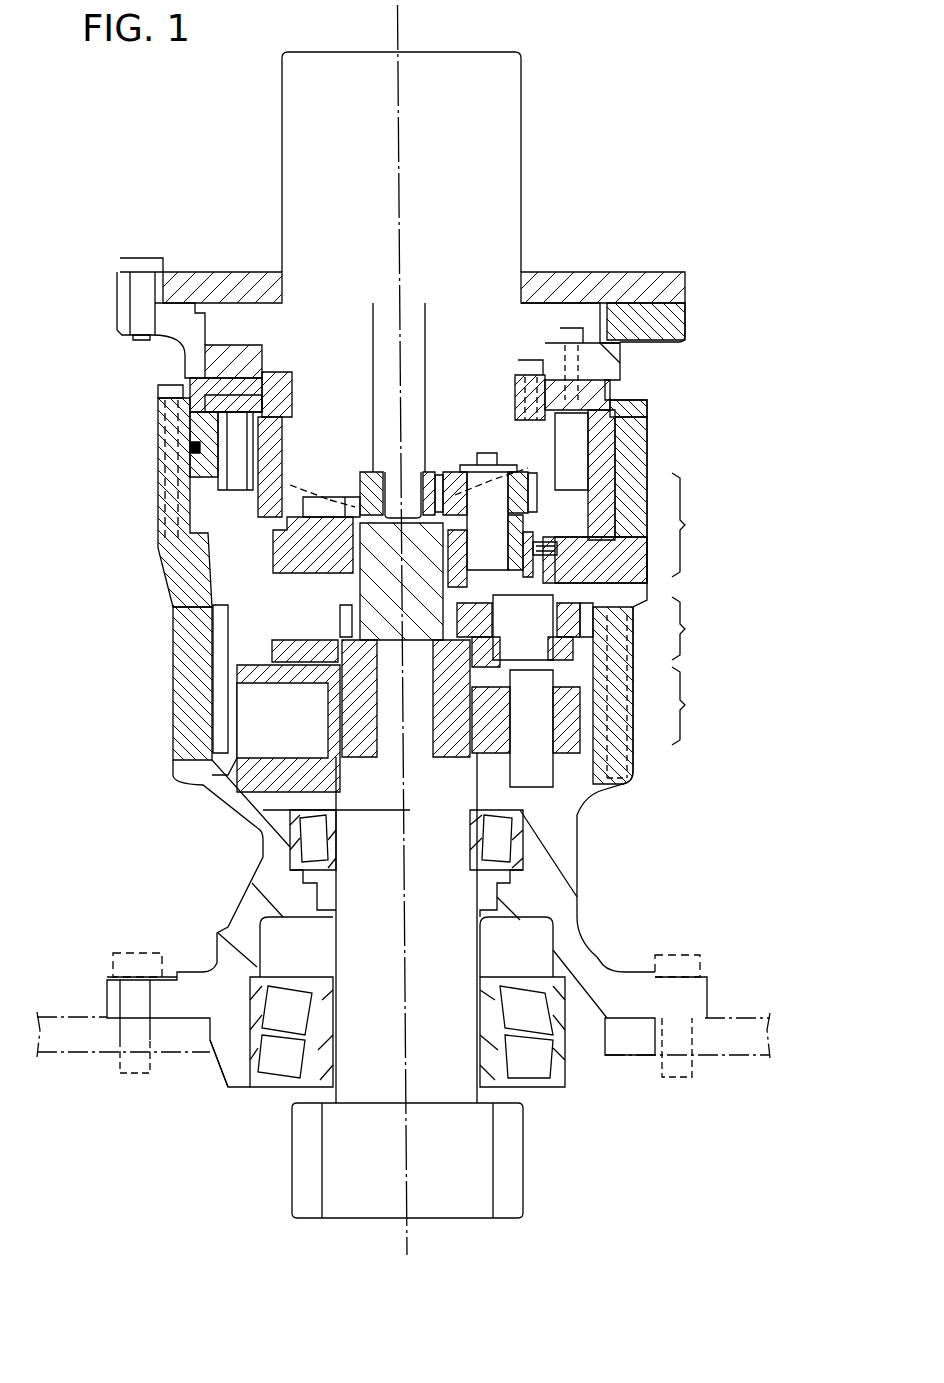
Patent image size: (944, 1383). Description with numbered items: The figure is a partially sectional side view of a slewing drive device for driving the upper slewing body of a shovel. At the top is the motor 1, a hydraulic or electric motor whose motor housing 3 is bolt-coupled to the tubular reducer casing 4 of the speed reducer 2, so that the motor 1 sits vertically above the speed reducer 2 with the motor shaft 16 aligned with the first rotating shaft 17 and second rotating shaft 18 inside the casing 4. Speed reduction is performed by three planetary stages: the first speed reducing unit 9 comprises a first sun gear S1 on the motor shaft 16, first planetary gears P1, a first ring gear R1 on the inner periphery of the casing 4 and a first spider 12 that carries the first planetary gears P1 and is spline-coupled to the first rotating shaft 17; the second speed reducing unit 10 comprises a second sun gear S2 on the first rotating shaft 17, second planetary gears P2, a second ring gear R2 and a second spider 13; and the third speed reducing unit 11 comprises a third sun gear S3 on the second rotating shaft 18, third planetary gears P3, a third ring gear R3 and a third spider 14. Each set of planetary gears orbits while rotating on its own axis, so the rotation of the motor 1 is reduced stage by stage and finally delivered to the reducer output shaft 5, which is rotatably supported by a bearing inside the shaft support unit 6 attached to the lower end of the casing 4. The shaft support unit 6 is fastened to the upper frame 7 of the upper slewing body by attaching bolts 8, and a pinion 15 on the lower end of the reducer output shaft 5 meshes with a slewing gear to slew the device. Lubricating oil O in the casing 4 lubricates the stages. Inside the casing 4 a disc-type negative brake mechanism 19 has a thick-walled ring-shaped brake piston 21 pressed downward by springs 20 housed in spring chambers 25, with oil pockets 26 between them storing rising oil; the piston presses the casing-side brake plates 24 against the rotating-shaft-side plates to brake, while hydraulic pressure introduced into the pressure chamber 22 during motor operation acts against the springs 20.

The motor 1 is at (272, 178).
The speed reducer 2 is at (153, 708).
The motor housing 3 is at (505, 200).
The reducer casing 4 is at (158, 486).
The reducer output shaft 5 is at (340, 1048).
The shaft support unit 6 is at (585, 928).
The upper frame 7 is at (740, 1015).
The attaching bolts 8 is at (120, 965).
The first speed reducing unit 9 is at (690, 525).
The second speed reducing unit 10 is at (699, 628).
The third speed reducing unit 11 is at (699, 706).
The first spider 12 is at (305, 505).
The second spider 13 is at (285, 645).
The third spider 14 is at (287, 813).
The pinion 15 is at (523, 1160).
The motor shaft 16 is at (433, 345).
The first rotating shaft 17 is at (352, 592).
The second rotating shaft 18 is at (380, 707).
The brake mechanism 19 is at (590, 527).
The springs 20 is at (247, 407).
The brake piston 21 is at (598, 432).
The pressure chamber 22 is at (191, 470).
The casing-side brake plates 24 is at (491, 511).
The spring chambers 25 is at (231, 420).
The oil pockets 26 is at (572, 420).
The lubricating oil O is at (337, 505).
The first sun gear S1 is at (358, 490).
The second sun gear S2 is at (340, 626).
The third sun gear S3 is at (338, 726).
The first planetary gears P1 is at (447, 480).
The second planetary gears P2 is at (643, 598).
The third planetary gears P3 is at (630, 760).
The first ring gear R1 is at (520, 486).
The second ring gear R2 is at (230, 637).
The third ring gear R3 is at (233, 727).